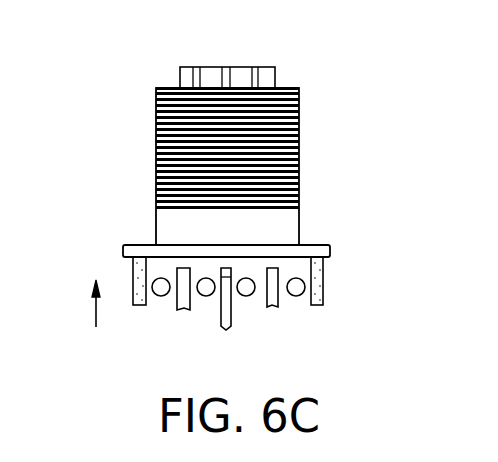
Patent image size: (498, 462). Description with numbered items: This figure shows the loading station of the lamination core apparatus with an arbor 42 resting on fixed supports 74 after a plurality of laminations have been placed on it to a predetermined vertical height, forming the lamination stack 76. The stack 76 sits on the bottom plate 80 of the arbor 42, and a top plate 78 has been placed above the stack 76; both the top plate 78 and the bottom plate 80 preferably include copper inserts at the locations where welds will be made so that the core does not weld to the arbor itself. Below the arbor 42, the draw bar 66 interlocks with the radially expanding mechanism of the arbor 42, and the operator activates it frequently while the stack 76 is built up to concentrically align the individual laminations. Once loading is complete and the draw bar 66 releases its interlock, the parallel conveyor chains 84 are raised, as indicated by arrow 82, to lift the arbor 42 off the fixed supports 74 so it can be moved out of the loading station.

The arbor 42 is at (275, 73).
The top plate 78 is at (300, 90).
The lamination stack 76 is at (262, 156).
The bottom plate 80 is at (298, 227).
The parallel conveyor chains 84 is at (142, 306).
The fixed supports 74 is at (180, 309).
The draw bar 66 is at (227, 320).
The arrow 82 is at (93, 305).